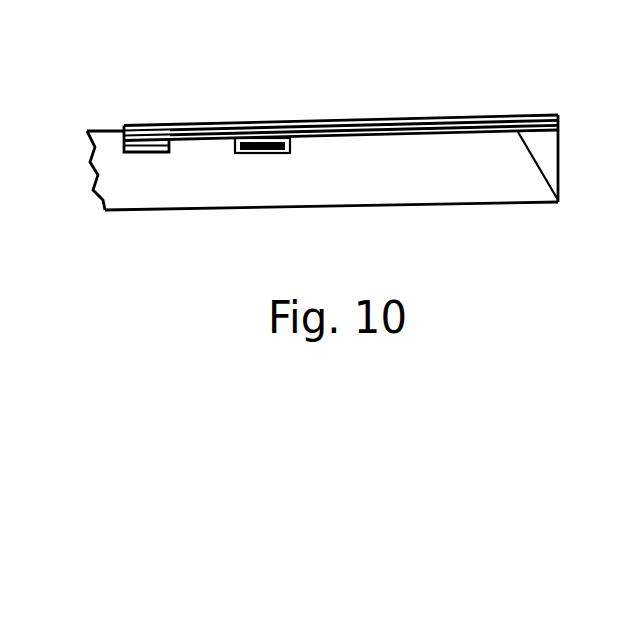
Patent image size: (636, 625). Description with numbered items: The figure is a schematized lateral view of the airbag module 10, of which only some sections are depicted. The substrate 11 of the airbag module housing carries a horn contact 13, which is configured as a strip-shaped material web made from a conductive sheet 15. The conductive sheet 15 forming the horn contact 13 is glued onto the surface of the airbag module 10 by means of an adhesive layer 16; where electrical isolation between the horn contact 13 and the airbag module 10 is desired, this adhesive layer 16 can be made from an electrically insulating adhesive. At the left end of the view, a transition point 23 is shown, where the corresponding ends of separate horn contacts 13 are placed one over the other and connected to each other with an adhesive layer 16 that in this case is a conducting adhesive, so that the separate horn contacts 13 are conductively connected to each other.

The airbag module 10 is at (498, 185).
The substrate 11 is at (558, 200).
The horn contact 13 is at (350, 106).
The conductive sheet 15 is at (188, 126).
The adhesive layer 16 is at (147, 133).
The transition point 23 is at (118, 130).